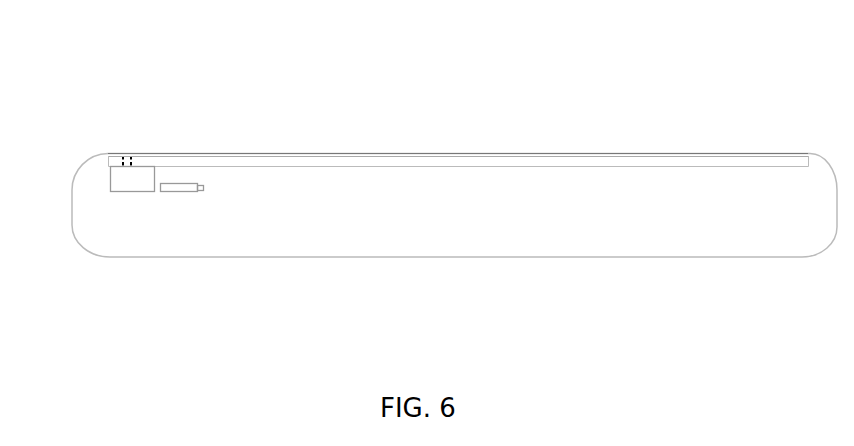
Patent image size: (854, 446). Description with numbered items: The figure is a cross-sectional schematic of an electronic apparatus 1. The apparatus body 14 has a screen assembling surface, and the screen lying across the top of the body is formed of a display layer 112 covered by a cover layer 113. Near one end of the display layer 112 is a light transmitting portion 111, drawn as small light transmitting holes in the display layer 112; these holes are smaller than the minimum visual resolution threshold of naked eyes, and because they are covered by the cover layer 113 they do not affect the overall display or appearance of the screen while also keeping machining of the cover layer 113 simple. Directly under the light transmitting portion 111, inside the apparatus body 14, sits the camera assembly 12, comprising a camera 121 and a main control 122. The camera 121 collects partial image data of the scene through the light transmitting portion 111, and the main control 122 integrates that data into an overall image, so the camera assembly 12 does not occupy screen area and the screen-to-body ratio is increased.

The electronic apparatus 1 is at (78, 70).
The light transmitting portion 111 is at (132, 153).
The display layer 112 is at (457, 163).
The cover layer 113 is at (478, 155).
The camera assembly 12 is at (202, 252).
The camera 121 is at (122, 178).
The main control 122 is at (198, 192).
The apparatus body 14 is at (543, 238).